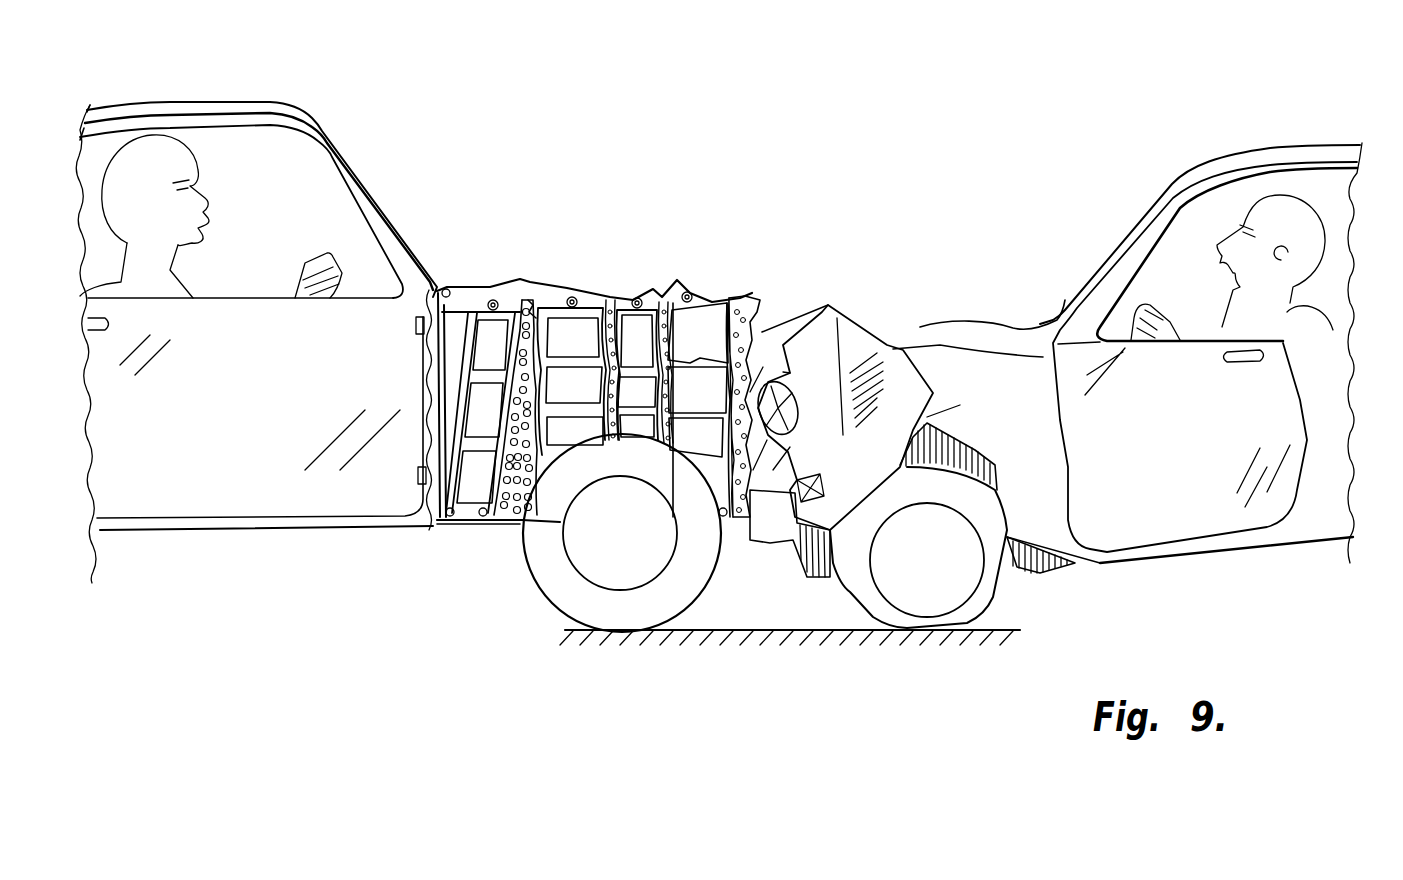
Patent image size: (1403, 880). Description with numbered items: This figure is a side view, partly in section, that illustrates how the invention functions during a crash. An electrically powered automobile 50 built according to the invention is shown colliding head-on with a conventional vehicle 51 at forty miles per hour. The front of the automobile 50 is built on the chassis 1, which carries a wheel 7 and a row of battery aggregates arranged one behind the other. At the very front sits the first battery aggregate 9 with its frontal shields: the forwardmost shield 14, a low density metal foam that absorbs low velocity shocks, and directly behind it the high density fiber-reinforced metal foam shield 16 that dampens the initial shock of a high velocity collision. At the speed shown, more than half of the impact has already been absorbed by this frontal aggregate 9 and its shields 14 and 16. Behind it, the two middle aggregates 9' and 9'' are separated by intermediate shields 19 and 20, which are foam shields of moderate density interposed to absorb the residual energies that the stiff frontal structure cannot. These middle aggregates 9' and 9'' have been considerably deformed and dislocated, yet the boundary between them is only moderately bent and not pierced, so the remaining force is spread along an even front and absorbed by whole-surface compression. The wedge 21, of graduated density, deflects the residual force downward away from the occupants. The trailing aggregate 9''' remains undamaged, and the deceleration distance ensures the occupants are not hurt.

The electrically powered automobile 50 is at (565, 154).
The conventional vehicle 51 is at (1053, 158).
The frontal battery aggregate 9 is at (699, 367).
The middle battery aggregate 9' is at (637, 328).
The middle battery aggregate 9'' is at (571, 336).
The trailing battery aggregate 9''' is at (487, 367).
The wedge 21 is at (530, 300).
The intermediate shield 20 is at (612, 302).
The frontal shield 19 is at (643, 292).
The high density fiber-reinforced metal foam shield 16 is at (737, 306).
The forwardmost shield 14 is at (757, 306).
The chassis 1 is at (452, 530).
The wheel 7 is at (530, 540).